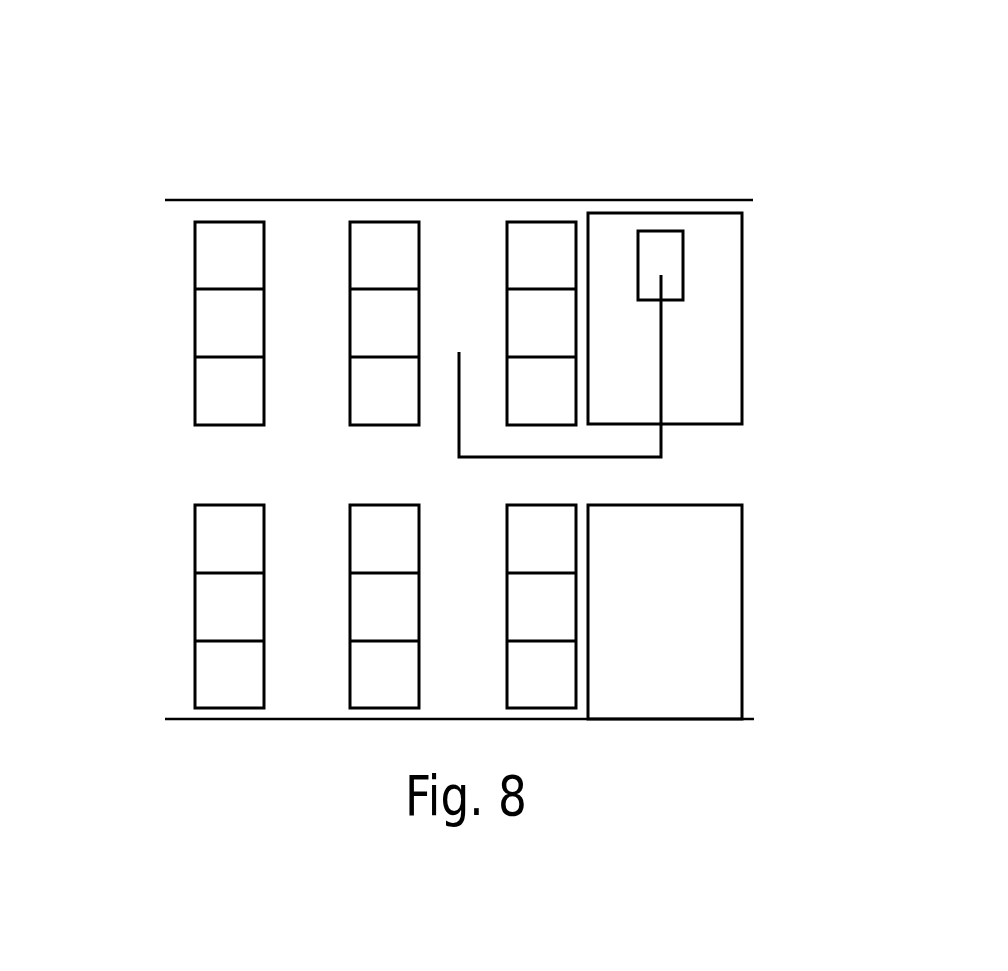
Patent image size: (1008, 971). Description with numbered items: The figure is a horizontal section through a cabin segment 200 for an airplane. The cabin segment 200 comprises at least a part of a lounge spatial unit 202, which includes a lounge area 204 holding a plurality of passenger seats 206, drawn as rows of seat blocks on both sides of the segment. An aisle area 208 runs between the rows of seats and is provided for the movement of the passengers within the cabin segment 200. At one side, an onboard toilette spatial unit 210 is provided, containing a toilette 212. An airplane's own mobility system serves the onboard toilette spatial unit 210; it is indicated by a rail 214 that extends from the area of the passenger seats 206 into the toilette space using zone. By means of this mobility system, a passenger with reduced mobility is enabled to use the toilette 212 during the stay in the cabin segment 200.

The cabin segment 200 is at (600, 85).
The lounge spatial unit 202 is at (330, 485).
The lounge area 204 is at (297, 295).
The passenger seats 206 is at (530, 268).
The aisle area 208 is at (205, 469).
The onboard toilette spatial unit 210 is at (752, 356).
The toilette 212 is at (683, 268).
The rail 214 is at (662, 443).